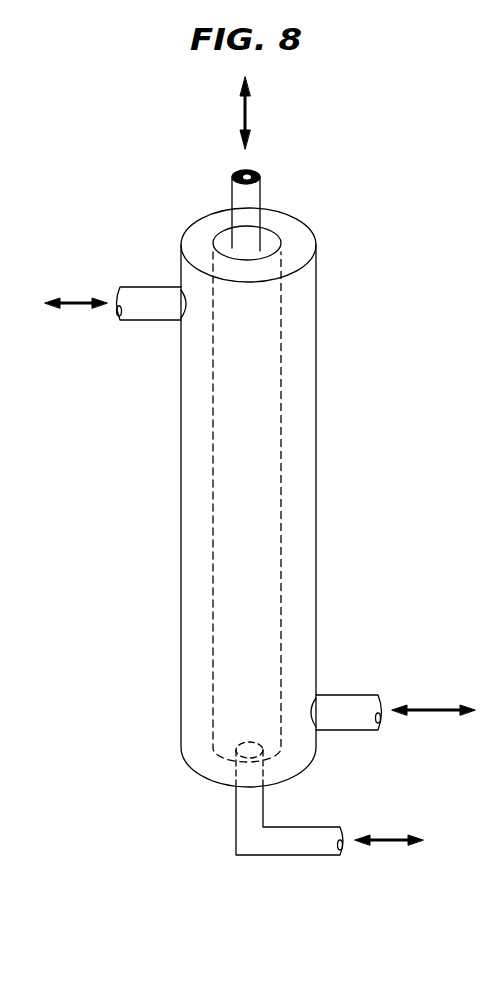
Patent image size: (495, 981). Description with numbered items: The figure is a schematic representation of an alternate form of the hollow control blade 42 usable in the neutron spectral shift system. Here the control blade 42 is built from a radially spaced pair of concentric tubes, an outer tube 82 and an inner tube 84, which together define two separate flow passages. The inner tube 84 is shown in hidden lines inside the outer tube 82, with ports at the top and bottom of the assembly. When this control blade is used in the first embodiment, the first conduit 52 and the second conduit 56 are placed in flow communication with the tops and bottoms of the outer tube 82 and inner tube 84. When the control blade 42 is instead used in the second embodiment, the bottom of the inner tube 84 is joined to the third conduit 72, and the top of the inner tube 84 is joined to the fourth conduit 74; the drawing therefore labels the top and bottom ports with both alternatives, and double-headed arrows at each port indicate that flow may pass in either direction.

The hollow control blade 42 is at (155, 551).
The first conduit 52 is at (137, 323).
The second conduit 56 is at (360, 692).
The third conduit 72 is at (313, 827).
The fourth conduit 74 is at (260, 183).
The outer tube 82 is at (316, 390).
The inner tube 84 is at (280, 257).